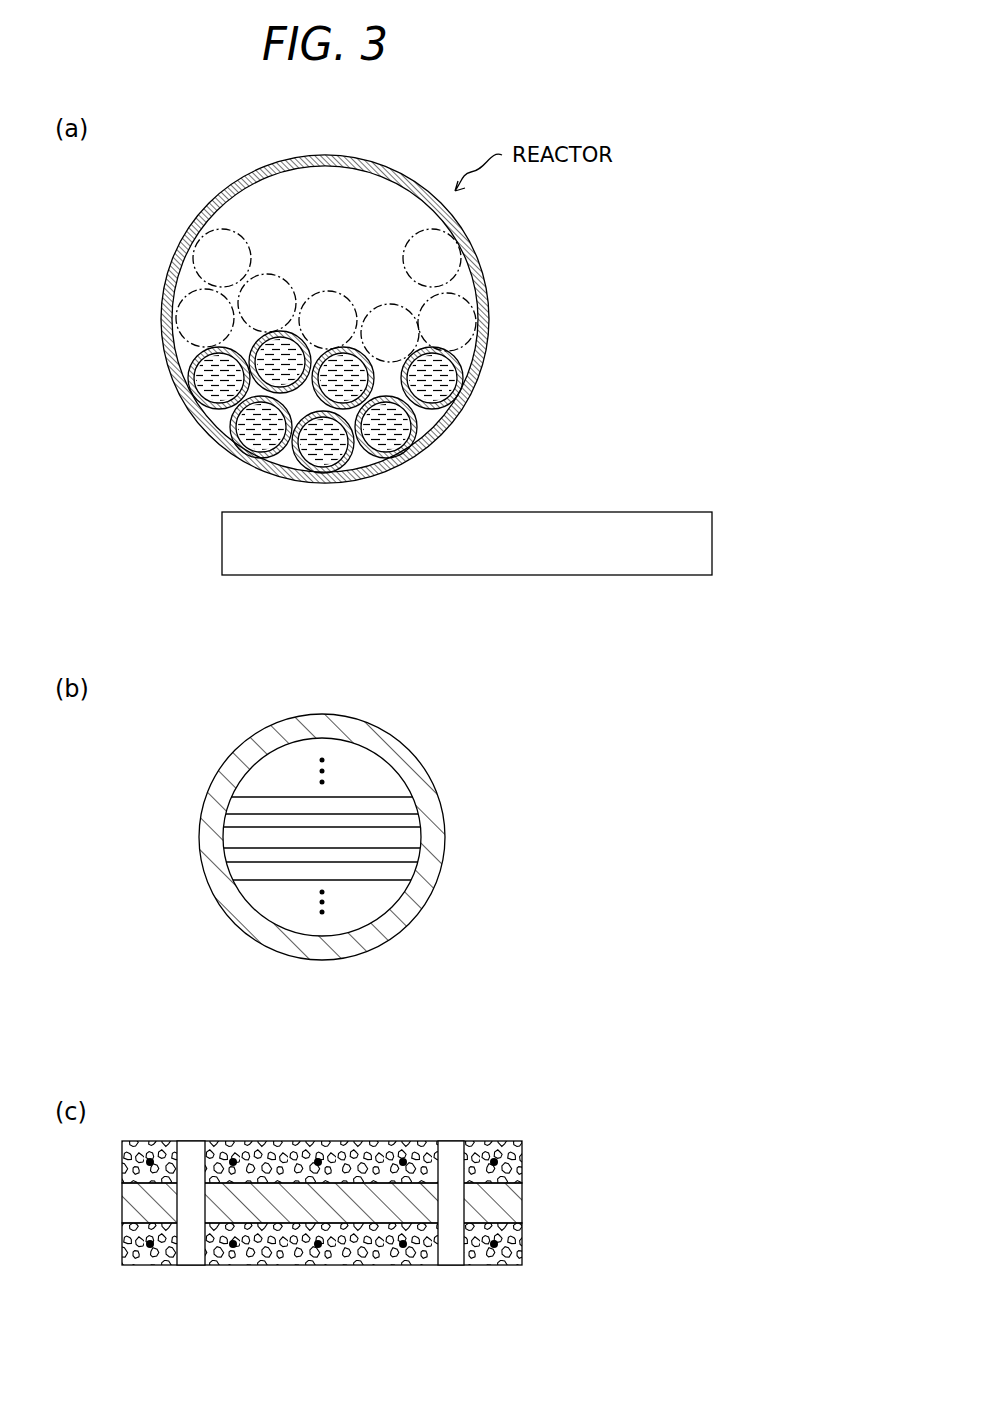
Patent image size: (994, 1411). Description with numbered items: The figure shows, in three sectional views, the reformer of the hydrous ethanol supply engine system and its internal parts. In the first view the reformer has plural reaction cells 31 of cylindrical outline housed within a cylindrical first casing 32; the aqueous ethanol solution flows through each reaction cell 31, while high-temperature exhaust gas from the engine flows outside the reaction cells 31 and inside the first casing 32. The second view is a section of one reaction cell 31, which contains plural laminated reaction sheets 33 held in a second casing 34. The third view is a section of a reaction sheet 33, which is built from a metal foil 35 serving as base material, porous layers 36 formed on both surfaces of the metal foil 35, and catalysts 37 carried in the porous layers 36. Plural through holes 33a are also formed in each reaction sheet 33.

The reaction cell 31 is at (419, 823).
The first casing 32 is at (475, 256).
The reaction sheet 33 is at (403, 805).
The through hole 33a is at (181, 1142).
The second casing 34 is at (403, 923).
The metal foil 35 is at (515, 1203).
The porous layer 36 is at (515, 1172).
The catalyst 37 is at (318, 1162).